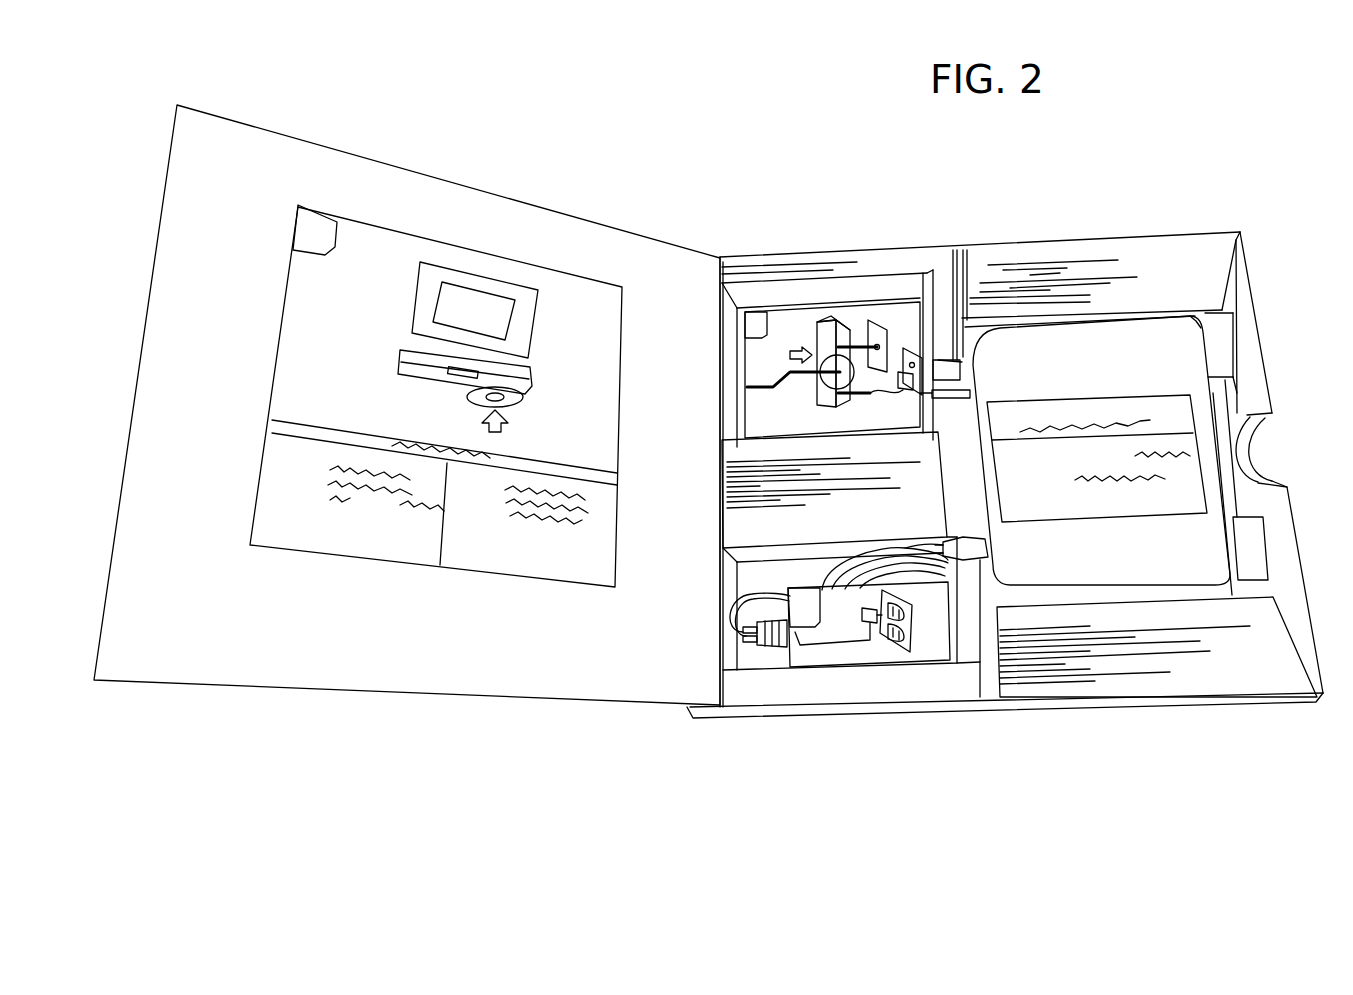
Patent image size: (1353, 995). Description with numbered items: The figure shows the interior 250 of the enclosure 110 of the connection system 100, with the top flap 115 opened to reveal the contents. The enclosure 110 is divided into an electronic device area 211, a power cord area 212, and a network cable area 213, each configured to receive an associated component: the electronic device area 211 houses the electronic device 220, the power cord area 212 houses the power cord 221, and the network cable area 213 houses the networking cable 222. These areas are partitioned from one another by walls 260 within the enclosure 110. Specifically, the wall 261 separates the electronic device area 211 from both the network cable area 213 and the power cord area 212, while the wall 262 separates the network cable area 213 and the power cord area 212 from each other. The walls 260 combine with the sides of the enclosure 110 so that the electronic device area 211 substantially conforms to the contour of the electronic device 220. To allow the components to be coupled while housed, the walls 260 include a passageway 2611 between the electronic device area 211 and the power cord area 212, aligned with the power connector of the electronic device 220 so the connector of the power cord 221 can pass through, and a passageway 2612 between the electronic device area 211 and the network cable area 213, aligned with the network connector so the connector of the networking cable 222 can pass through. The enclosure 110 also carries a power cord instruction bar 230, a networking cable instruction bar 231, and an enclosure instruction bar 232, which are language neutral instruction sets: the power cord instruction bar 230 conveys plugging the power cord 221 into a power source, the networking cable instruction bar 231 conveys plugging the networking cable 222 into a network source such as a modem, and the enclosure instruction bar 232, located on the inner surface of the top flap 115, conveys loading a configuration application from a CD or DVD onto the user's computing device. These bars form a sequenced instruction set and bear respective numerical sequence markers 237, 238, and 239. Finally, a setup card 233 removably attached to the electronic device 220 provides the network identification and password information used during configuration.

The connection system 100 is at (345, 101).
The enclosure 110 is at (497, 158).
The top flap 115 is at (443, 668).
The sequence marker 239 is at (436, 427).
The enclosure instruction bar 232 is at (372, 508).
The network cable area 213 is at (717, 280).
The sequence marker 238 is at (752, 313).
The networking cable instruction bar 231 is at (790, 330).
The networking cable 222 is at (907, 355).
The walls 260 is at (945, 243).
The passageway 2612 is at (950, 348).
The electronic device area 211 is at (967, 357).
The electronic device 220 is at (1148, 389).
The setup card 233 is at (1155, 420).
The wall 262 is at (760, 523).
The power cord area 212 is at (762, 568).
The power cord 221 is at (768, 640).
The sequence marker 237 is at (800, 615).
The power cord instruction bar 230 is at (853, 682).
The interior 250 is at (935, 740).
The wall 261 is at (975, 685).
The passageway 2611 is at (975, 575).